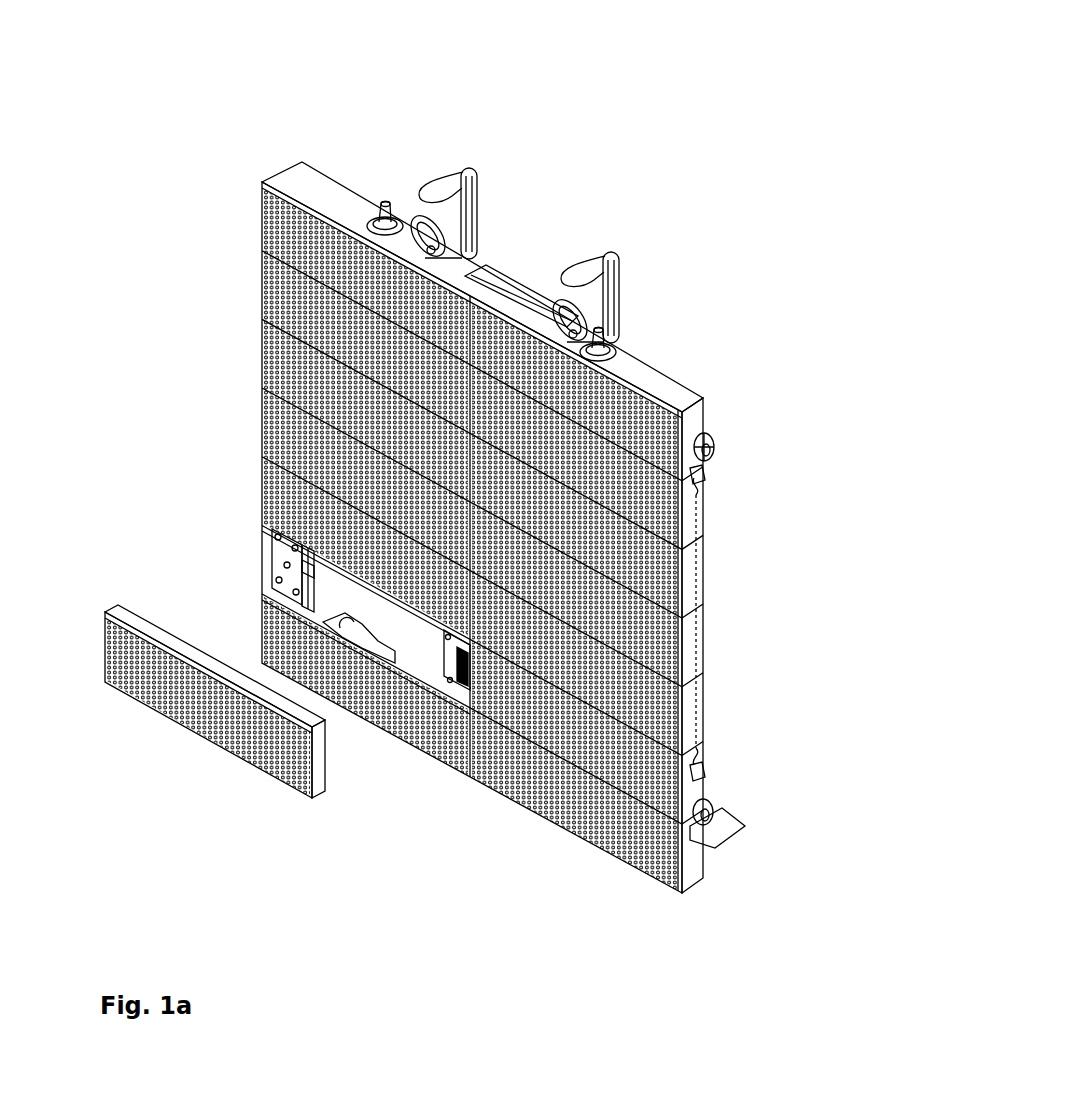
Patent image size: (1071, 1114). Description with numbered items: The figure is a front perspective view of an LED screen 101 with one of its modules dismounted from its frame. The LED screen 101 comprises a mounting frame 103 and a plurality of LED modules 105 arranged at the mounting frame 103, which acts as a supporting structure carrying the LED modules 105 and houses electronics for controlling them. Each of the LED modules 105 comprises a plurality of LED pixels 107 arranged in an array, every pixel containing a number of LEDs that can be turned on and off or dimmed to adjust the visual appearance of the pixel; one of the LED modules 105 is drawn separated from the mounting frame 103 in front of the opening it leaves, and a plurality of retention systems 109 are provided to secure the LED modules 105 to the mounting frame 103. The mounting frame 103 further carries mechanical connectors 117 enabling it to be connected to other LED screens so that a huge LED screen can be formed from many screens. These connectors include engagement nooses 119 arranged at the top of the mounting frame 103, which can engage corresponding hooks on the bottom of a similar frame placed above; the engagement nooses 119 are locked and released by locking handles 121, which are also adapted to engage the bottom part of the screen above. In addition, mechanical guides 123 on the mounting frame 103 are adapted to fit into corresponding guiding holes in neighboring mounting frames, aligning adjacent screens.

The LED screen 101 is at (668, 98).
The mounting frame 103 is at (312, 192).
The LED modules 105 is at (256, 328).
The LED pixels 107 is at (262, 468).
The retention systems 109 is at (250, 540).
The mechanical connectors 117 is at (435, 156).
The engagement nooses 119 is at (376, 195).
The locking handles 121 is at (477, 217).
The mechanical guides 123 is at (381, 218).